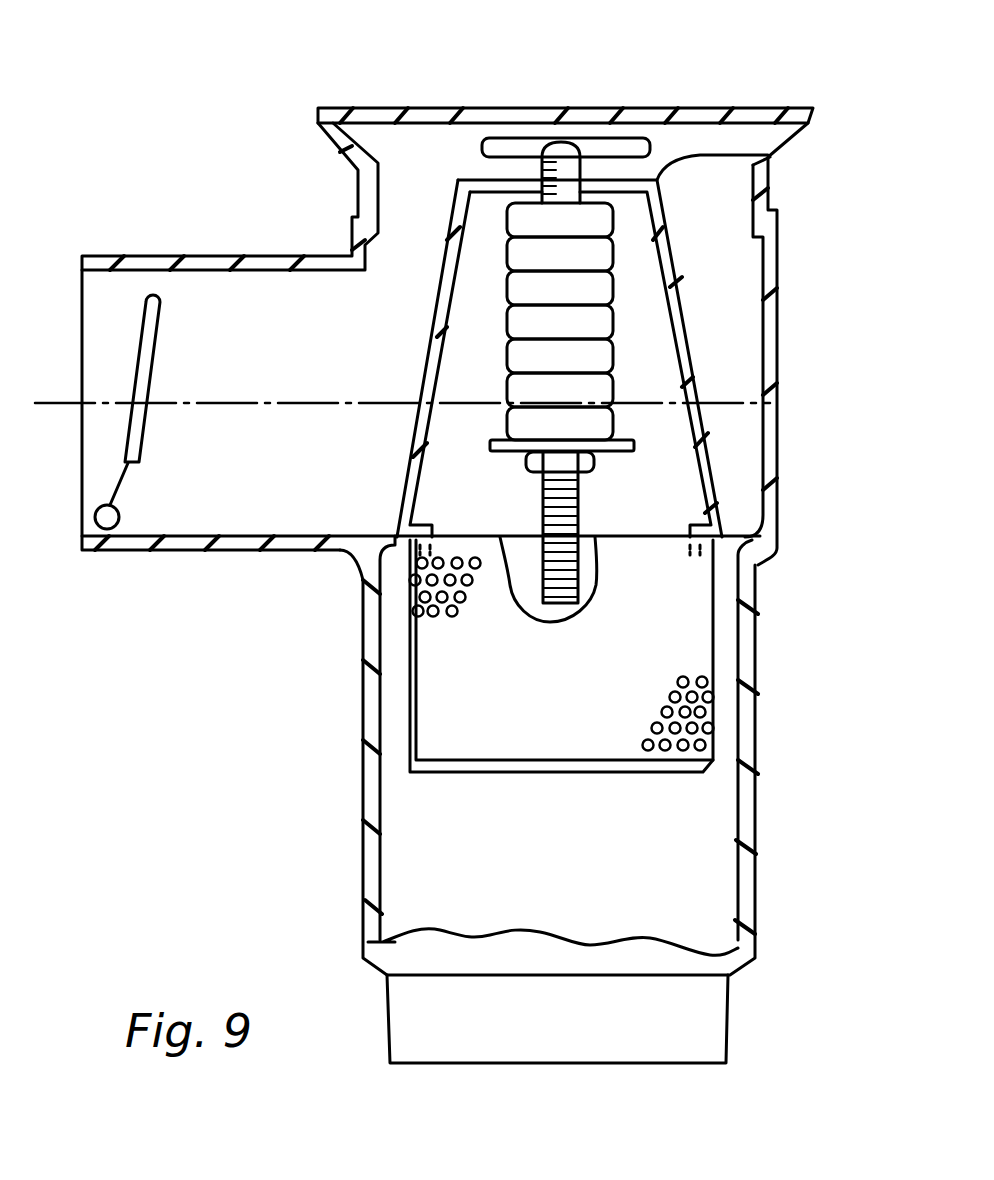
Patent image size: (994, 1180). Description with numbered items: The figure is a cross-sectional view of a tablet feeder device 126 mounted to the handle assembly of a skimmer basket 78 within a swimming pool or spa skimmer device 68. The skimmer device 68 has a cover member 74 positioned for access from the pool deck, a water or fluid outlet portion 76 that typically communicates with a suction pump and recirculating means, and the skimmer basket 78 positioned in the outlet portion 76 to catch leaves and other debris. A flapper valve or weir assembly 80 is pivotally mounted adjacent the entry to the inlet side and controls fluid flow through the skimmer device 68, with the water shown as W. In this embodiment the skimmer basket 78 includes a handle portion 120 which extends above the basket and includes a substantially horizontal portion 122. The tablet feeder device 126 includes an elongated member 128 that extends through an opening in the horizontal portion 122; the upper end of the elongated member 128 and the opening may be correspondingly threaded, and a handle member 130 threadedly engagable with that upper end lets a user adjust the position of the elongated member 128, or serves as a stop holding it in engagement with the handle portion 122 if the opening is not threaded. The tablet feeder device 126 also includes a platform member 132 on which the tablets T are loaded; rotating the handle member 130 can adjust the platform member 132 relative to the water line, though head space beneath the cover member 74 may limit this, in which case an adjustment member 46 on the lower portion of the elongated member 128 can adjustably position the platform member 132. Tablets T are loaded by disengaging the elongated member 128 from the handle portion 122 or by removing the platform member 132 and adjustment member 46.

The skimmer device 68 is at (178, 204).
The cover member 74 is at (368, 108).
The water or fluid outlet portion 76 is at (760, 850).
The skimmer basket 78 is at (410, 686).
The flapper valve or weir assembly 80 is at (160, 323).
The handle portion 120 is at (704, 348).
The substantially horizontal portion 122 is at (770, 157).
The tablet feeder device 126 is at (590, 180).
The elongated member 128 is at (545, 474).
The handle member 130 is at (512, 138).
The platform member 132 is at (636, 447).
The adjustment member 46 is at (596, 468).
The tablets T is at (614, 256).
The water W is at (226, 476).